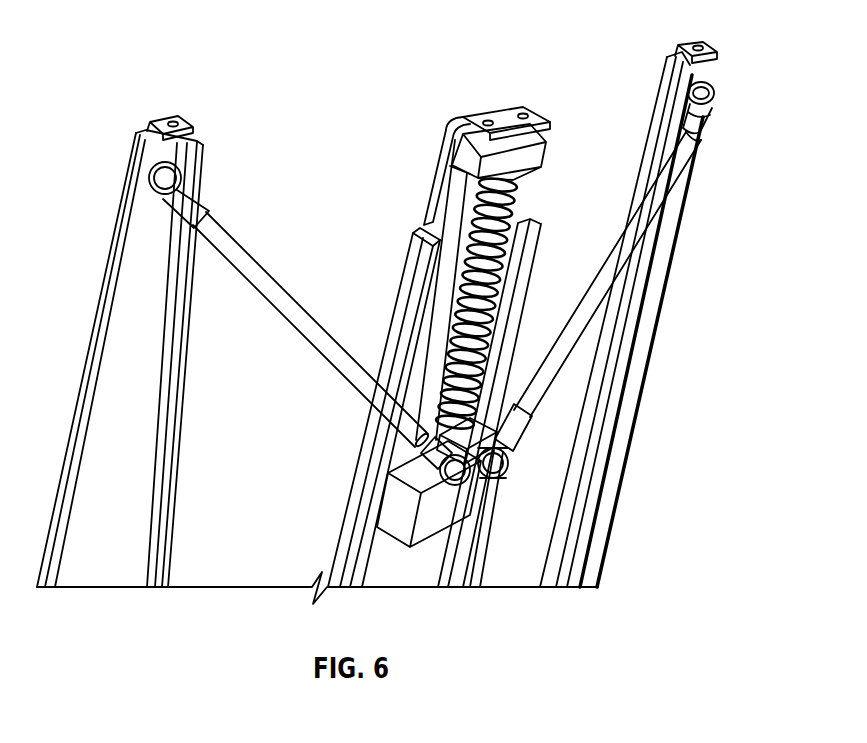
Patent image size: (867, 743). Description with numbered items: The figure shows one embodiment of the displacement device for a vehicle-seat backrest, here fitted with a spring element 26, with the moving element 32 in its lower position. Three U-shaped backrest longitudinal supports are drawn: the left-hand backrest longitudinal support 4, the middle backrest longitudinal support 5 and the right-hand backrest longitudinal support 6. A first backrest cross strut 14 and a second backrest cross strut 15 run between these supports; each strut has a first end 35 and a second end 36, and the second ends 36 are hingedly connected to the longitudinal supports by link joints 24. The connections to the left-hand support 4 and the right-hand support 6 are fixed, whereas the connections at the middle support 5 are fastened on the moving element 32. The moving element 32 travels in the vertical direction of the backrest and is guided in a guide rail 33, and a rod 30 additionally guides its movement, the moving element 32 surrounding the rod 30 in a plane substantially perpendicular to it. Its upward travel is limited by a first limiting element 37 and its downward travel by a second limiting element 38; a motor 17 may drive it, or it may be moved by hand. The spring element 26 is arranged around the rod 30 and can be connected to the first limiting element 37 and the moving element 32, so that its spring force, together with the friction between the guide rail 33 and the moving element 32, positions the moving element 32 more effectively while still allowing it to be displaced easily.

The left-hand backrest longitudinal support 4 is at (655, 262).
The middle backrest longitudinal support 5 is at (413, 290).
The right-hand backrest longitudinal support 6 is at (121, 426).
The first backrest cross strut 14 is at (615, 242).
The second backrest cross strut 15 is at (250, 256).
The motor 17 is at (358, 507).
The second limiting element 38 is at (393, 510).
The link joint 24 is at (155, 170).
The spring element 26 is at (515, 207).
The rod 30 is at (509, 303).
The moving element 32 is at (495, 477).
The guide rail 33 is at (455, 185).
The first end 35 is at (690, 127).
The second end 36 is at (410, 444).
The first limiting element 37 is at (537, 153).